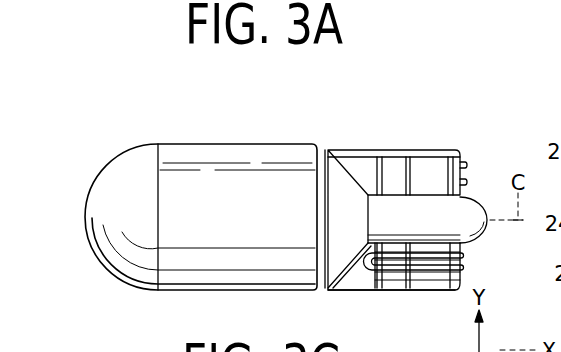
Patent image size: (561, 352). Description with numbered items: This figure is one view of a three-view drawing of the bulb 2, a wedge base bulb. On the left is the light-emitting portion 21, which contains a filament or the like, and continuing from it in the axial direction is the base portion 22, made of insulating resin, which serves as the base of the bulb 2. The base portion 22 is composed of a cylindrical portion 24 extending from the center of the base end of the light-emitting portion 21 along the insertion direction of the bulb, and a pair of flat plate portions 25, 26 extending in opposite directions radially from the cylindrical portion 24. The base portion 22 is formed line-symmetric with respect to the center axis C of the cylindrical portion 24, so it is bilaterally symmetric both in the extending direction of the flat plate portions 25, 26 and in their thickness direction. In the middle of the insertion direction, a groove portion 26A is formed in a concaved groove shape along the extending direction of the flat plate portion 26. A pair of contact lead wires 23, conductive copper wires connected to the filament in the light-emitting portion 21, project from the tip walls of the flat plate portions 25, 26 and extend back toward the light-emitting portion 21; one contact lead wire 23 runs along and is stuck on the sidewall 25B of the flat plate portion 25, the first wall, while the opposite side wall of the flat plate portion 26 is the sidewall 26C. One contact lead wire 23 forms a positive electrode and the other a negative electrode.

The bulb 2 is at (143, 126).
The light-emitting portion 21 is at (191, 143).
The base portion 22 is at (347, 150).
The contact lead wire 23 is at (466, 165).
The cylindrical portion 24 is at (441, 178).
The flat plate portion 25 is at (363, 288).
The sidewall 25B is at (443, 262).
The flat plate portion 26 is at (366, 150).
The groove portion 26A is at (394, 165).
The sidewall 26C is at (423, 170).